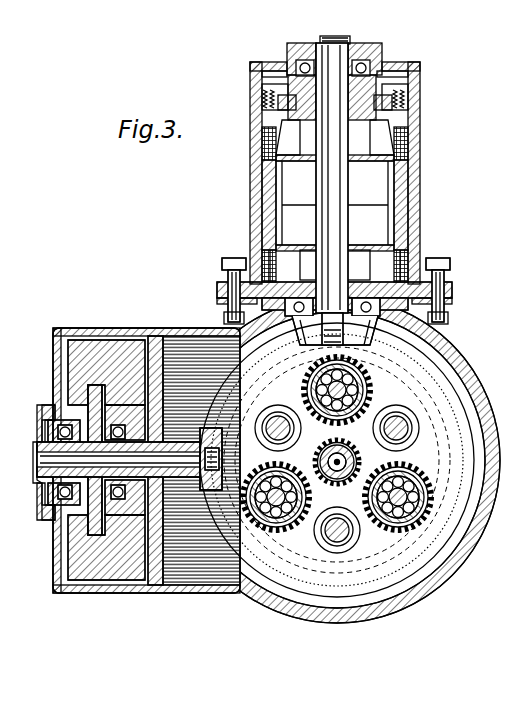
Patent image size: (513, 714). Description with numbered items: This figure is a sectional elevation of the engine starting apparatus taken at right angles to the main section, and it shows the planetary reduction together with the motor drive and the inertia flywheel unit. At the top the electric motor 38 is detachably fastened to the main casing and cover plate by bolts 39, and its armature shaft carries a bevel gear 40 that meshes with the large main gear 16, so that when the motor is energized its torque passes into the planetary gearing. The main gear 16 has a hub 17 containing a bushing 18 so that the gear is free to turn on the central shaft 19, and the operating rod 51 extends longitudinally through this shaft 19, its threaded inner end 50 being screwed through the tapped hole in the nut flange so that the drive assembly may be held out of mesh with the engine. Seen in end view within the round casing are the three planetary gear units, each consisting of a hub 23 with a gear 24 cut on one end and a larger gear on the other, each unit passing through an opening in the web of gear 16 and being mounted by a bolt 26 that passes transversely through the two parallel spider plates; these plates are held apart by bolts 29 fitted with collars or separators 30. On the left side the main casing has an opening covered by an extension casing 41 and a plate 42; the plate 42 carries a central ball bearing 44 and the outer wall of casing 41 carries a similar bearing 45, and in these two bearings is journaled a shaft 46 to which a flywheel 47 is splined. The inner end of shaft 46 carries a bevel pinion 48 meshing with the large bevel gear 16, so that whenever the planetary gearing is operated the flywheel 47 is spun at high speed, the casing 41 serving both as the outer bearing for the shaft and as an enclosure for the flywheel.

The main gear 16 is at (238, 362).
The hub 17 is at (337, 484).
The bushing 18 is at (327, 466).
The central shaft 19 is at (339, 468).
The hub 23 is at (340, 456).
The gear 24 is at (356, 378).
The bolt 26 is at (340, 456).
The bolt 29 is at (339, 485).
The collar or separator 30 is at (272, 416).
The electric motor 38 is at (421, 172).
The bolt 39 is at (232, 258).
The bevel gear 40 is at (425, 332).
The extension casing 41 is at (136, 461).
The plate 42 is at (156, 588).
The ball bearing 44 is at (90, 500).
The bearing 45 is at (37, 440).
The shaft 46 is at (129, 459).
The flywheel 47 is at (110, 575).
The bevel pinion 48 is at (222, 492).
The threaded inner end 50 is at (332, 194).
The operating rod 51 is at (345, 456).